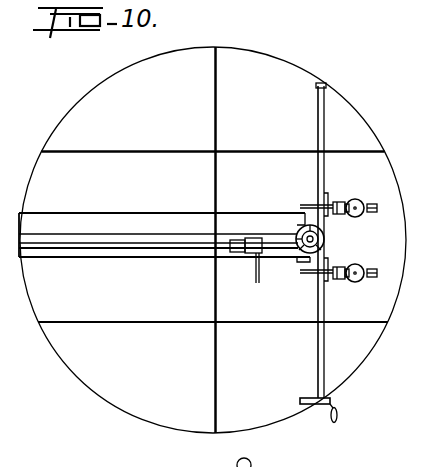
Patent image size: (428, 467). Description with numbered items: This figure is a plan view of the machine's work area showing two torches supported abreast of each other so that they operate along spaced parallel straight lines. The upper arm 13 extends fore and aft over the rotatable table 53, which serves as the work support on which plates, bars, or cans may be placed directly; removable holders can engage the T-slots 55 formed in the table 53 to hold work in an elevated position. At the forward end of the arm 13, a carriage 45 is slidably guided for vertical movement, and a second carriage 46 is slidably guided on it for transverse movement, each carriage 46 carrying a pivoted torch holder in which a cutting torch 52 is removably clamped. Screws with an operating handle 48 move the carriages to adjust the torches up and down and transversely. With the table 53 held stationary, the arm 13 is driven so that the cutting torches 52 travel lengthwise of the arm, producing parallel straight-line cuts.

The upper arm 13 is at (144, 218).
The carriage 45 is at (324, 311).
The second carriage 46 is at (327, 200).
The operating handle 48 is at (316, 405).
The cutting torch 52 is at (364, 200).
The rotatable table 53 is at (126, 348).
The T-slots 55 is at (216, 386).